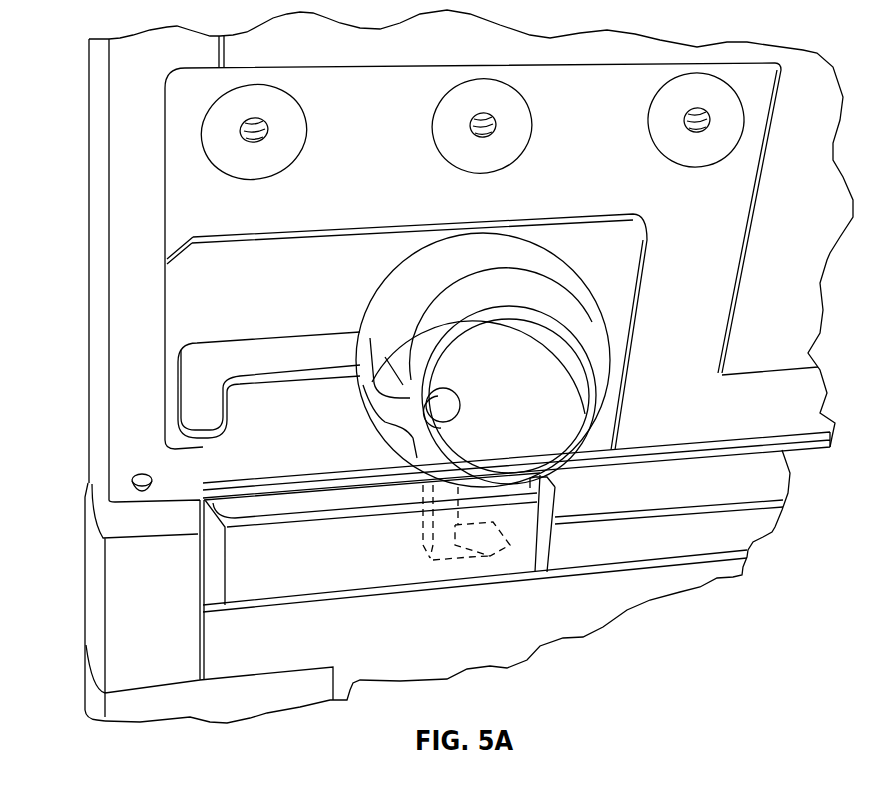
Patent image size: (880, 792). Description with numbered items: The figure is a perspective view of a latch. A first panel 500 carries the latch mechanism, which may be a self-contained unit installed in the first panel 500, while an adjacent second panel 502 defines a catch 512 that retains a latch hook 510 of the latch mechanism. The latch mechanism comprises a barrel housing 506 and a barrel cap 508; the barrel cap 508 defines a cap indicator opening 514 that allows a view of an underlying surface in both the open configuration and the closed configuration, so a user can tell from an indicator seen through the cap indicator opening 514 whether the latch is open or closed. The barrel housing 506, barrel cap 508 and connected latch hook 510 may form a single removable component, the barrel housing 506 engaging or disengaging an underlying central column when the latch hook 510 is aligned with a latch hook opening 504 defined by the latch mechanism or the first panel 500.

The first panel 500 is at (97, 343).
The second panel 502 is at (97, 563).
The latch hook opening 504 is at (213, 367).
The barrel housing 506 is at (402, 317).
The barrel cap 508 is at (548, 417).
The latch hook 510 is at (448, 548).
The catch 512 is at (350, 497).
The cap indicator opening 514 is at (442, 405).